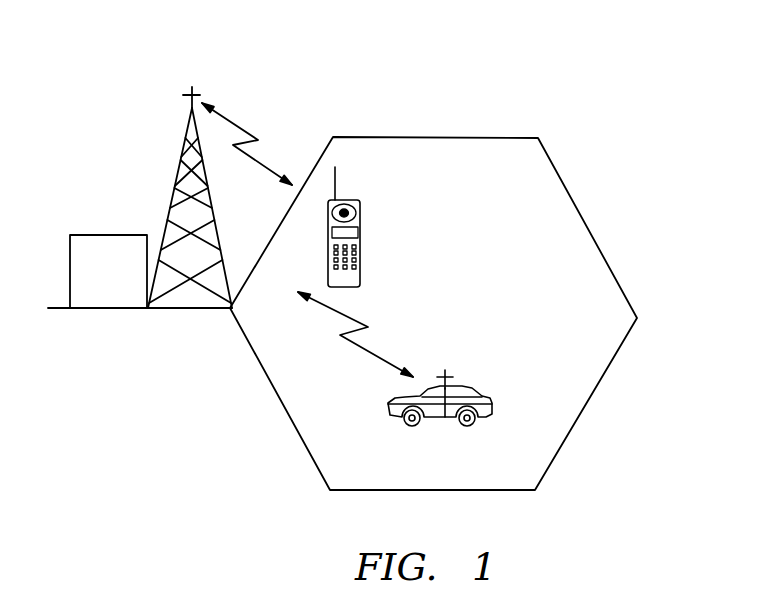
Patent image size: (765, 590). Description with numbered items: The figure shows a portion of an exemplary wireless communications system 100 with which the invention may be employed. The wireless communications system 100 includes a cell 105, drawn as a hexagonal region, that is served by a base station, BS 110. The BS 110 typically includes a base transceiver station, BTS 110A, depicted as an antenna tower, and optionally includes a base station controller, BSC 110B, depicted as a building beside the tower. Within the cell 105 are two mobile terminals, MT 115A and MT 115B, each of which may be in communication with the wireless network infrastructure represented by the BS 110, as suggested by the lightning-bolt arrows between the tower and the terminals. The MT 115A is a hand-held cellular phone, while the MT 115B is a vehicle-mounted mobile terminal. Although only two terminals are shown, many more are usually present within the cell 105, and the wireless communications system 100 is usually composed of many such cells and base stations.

The wireless communications system 100 is at (636, 88).
The cell 105 is at (443, 135).
The base station 110 is at (127, 225).
The base transceiver station 110A is at (193, 297).
The base station controller 110B is at (92, 298).
The hand-held cellular phone mobile terminal 115A is at (362, 200).
The vehicle-mounted mobile terminal 115B is at (467, 392).